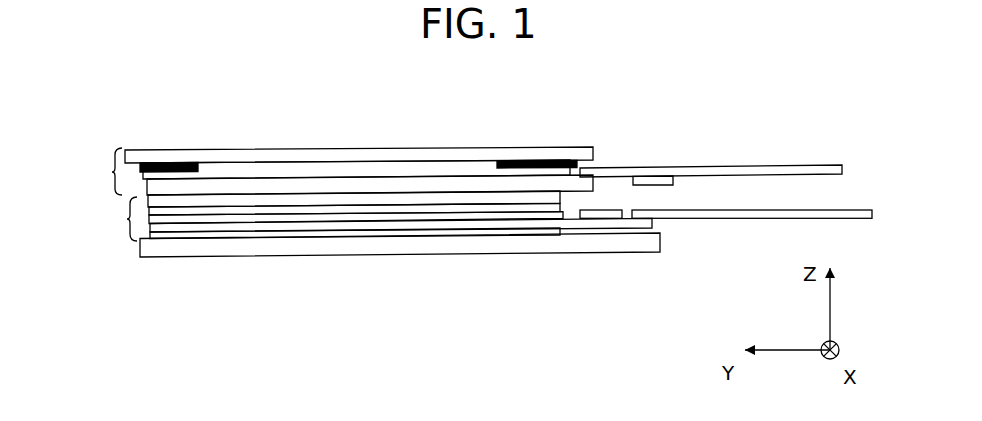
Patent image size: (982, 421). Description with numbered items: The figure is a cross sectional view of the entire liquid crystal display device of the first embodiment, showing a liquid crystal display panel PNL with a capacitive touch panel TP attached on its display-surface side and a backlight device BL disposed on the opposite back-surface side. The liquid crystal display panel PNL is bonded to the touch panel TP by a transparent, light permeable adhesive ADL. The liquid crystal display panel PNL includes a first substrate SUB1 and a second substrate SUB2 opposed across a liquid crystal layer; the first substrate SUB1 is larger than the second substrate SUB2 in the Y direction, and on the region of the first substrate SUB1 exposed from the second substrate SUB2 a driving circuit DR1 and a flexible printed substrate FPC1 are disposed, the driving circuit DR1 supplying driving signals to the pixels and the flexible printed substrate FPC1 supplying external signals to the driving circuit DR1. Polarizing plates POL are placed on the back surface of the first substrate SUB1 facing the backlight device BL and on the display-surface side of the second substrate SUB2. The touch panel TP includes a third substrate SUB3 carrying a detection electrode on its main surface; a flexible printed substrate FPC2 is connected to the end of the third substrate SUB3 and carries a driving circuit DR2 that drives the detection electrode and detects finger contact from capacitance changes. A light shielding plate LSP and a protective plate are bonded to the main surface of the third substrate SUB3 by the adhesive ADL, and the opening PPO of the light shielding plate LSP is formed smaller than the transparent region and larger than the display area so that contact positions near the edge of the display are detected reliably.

The third substrate SUB3 is at (438, 184).
The light shielding plate LSP is at (176, 163).
The adhesive ADL is at (316, 197).
The opening of the light shielding plate PPO is at (495, 147).
The polarizing plates POL is at (472, 212).
The second substrate SUB2 is at (322, 221).
The first substrate SUB1 is at (259, 226).
The backlight device BL is at (384, 244).
The driving circuit DR1 is at (592, 219).
The flexible printed substrate FPC1 is at (762, 218).
The flexible printed substrate FPC2 is at (792, 165).
The driving circuit DR2 is at (657, 177).
The touch panel TP is at (101, 171).
The liquid crystal display panel PNL is at (109, 219).